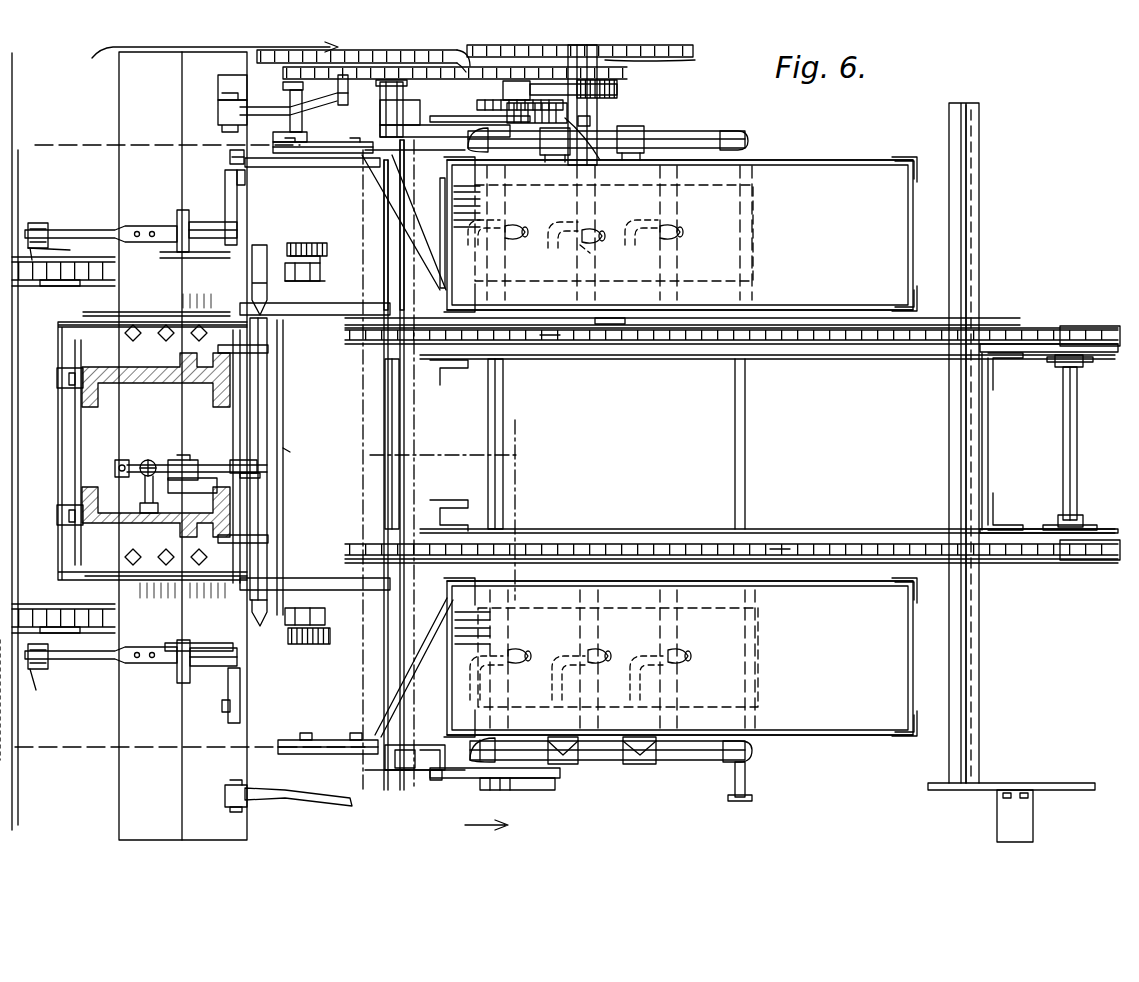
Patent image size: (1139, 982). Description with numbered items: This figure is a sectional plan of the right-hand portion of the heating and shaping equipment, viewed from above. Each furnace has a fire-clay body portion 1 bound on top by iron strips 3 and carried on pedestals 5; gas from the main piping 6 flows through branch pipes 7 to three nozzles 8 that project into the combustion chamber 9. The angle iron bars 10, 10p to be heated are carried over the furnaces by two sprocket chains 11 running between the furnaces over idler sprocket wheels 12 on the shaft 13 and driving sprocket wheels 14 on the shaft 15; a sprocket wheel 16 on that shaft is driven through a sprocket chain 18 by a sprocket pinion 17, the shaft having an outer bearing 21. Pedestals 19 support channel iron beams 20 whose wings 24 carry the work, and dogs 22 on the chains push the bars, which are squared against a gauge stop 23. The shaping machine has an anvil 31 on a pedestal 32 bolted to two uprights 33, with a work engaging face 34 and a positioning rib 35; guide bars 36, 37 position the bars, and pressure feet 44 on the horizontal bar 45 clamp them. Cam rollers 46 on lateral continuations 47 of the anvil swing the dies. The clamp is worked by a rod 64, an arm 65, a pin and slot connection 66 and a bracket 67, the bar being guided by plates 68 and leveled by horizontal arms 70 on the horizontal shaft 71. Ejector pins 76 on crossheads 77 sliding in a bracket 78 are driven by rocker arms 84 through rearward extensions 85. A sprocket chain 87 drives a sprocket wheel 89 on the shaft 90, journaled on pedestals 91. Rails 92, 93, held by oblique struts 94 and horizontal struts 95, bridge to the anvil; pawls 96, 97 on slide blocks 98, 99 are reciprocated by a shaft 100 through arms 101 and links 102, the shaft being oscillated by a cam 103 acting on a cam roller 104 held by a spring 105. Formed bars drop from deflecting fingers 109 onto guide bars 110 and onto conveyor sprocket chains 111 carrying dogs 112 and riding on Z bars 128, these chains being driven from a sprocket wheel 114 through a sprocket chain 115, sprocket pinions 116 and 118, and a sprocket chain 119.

The body portion 1 is at (845, 185).
The iron strips 3 is at (815, 158).
The pedestals 5 is at (905, 157).
The main piping 6 is at (746, 372).
The branch pipes 7 is at (378, 445).
The nozzles 8 is at (680, 228).
The combustion chamber 9 is at (752, 202).
The object to be heated 10 is at (950, 108).
The object to be heated 10p is at (972, 105).
The sprocket chains 11 is at (848, 350).
The idler sprocket wheels 12 is at (1085, 324).
The shaft 13 is at (1062, 442).
The driving sprocket wheels 14 is at (372, 290).
The shaft 15 is at (400, 392).
The sprocket wheel 16 is at (216, 78).
The sprocket pinion 17 is at (630, 78).
The sprocket chain 18 is at (352, 95).
The pedestals 19 is at (1000, 360).
The channel iron beams 20 is at (672, 360).
The bearing 21 is at (325, 75).
The dogs 22 is at (595, 350).
The gauge stop 23 is at (1060, 783).
The wings 24 is at (1004, 320).
The anvil 31 is at (288, 422).
The pedestal 32 is at (125, 172).
The uprights 33 is at (156, 445).
The work engaging face 34 is at (283, 448).
The positioning rib 35 is at (230, 414).
The guide bar 36 is at (320, 98).
The guide bar 37 is at (305, 795).
The pressure feet 44 is at (268, 240).
The horizontal bar 45 is at (268, 380).
The cam rollers 46 is at (245, 180).
The lateral continuations 47 is at (225, 172).
The rod 64 is at (113, 466).
The intermediately pivoted arm 65 is at (137, 460).
The pin and slot connection 66 is at (262, 475).
The bracket 67 is at (240, 458).
The plates 68 is at (268, 352).
The horizontal arms 70 is at (143, 312).
The horizontal shaft 71 is at (66, 412).
The pins 76 is at (205, 222).
The crosshead 77 is at (180, 212).
The bracket 78 is at (165, 256).
The rocker arms 84 is at (24, 226).
The rearward extensions 85 is at (70, 230).
The sprocket chain 87 is at (630, 72).
The sprocket wheel 89 is at (695, 48).
The shaft 90 is at (590, 255).
The pedestals 91 is at (600, 118).
The rail 92 is at (280, 130).
The rail 93 is at (290, 740).
The oblique struts 94 is at (333, 733).
The horizontal struts 95 is at (372, 200).
The pawl 96 is at (430, 138).
The pawl 97 is at (410, 770).
The slide block 98 is at (480, 114).
The slide block 99 is at (430, 782).
The shaft 100 is at (505, 428).
The arms 101 is at (540, 140).
The links 102 is at (565, 130).
The cam 103 is at (620, 92).
The cam roller 104 is at (501, 95).
The spring 105 is at (545, 125).
The deflecting fingers 109 is at (333, 245).
The guide bars 110 is at (335, 318).
The conveyor sprocket chains 111 is at (40, 287).
The dogs 112 is at (62, 286).
The sprocket wheel 114 is at (404, 95).
The sprocket chain 115 is at (205, 72).
The sprocket pinion 116 is at (262, 66).
The sprocket pinion 118 is at (360, 172).
The sprocket chain 119 is at (263, 168).
The Z bars 128 is at (50, 254).